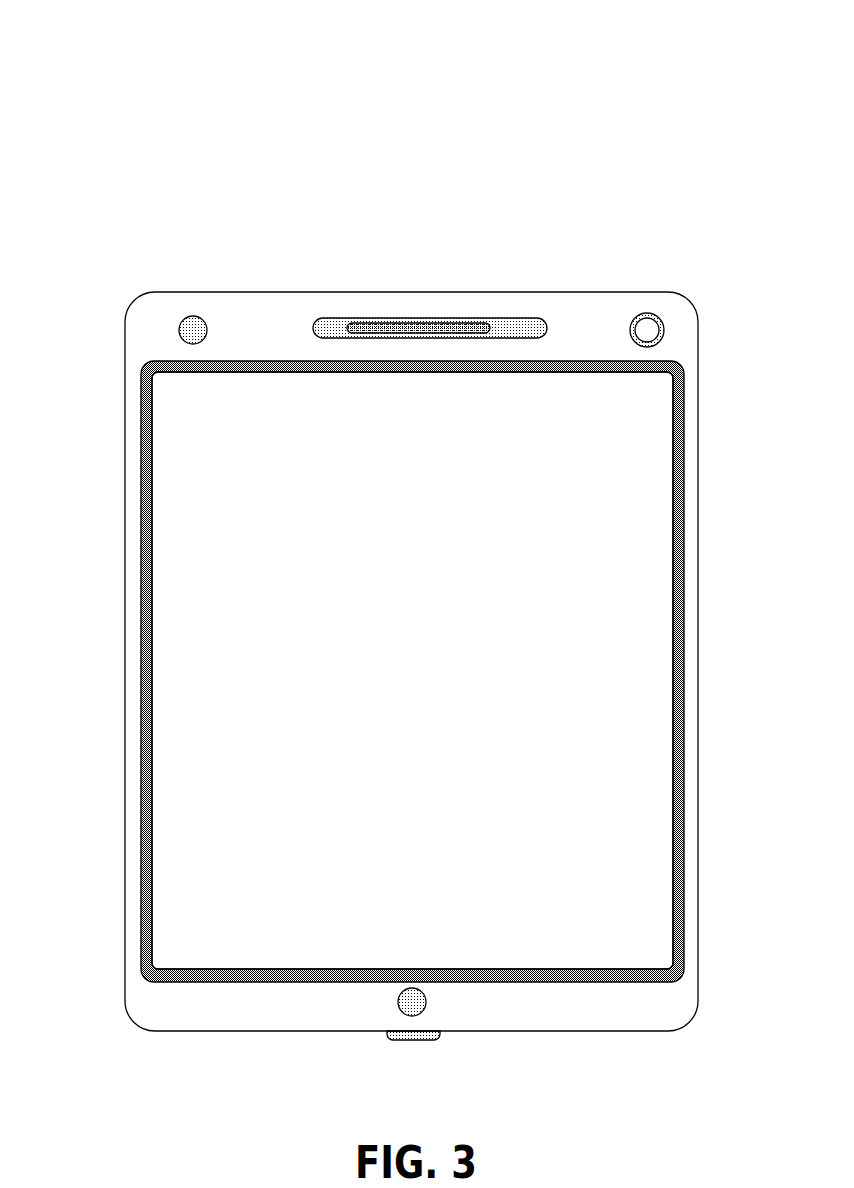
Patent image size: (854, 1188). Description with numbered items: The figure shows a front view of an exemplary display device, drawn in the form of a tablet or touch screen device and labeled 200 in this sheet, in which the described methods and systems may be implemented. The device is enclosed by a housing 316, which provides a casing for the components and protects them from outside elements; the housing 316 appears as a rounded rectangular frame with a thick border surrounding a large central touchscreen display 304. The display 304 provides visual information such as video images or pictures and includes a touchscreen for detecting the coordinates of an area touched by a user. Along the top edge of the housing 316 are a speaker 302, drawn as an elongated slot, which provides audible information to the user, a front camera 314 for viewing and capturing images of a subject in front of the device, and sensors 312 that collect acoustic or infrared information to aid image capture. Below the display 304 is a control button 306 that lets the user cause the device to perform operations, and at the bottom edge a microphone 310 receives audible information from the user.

The electronic device 200 is at (128, 58).
The speaker 302 is at (422, 328).
The touchscreen display 304 is at (518, 362).
The control button 306 is at (427, 1002).
The microphone 310 is at (430, 1040).
The sensors 312 is at (664, 330).
The front camera 314 is at (193, 316).
The housing 316 is at (684, 482).